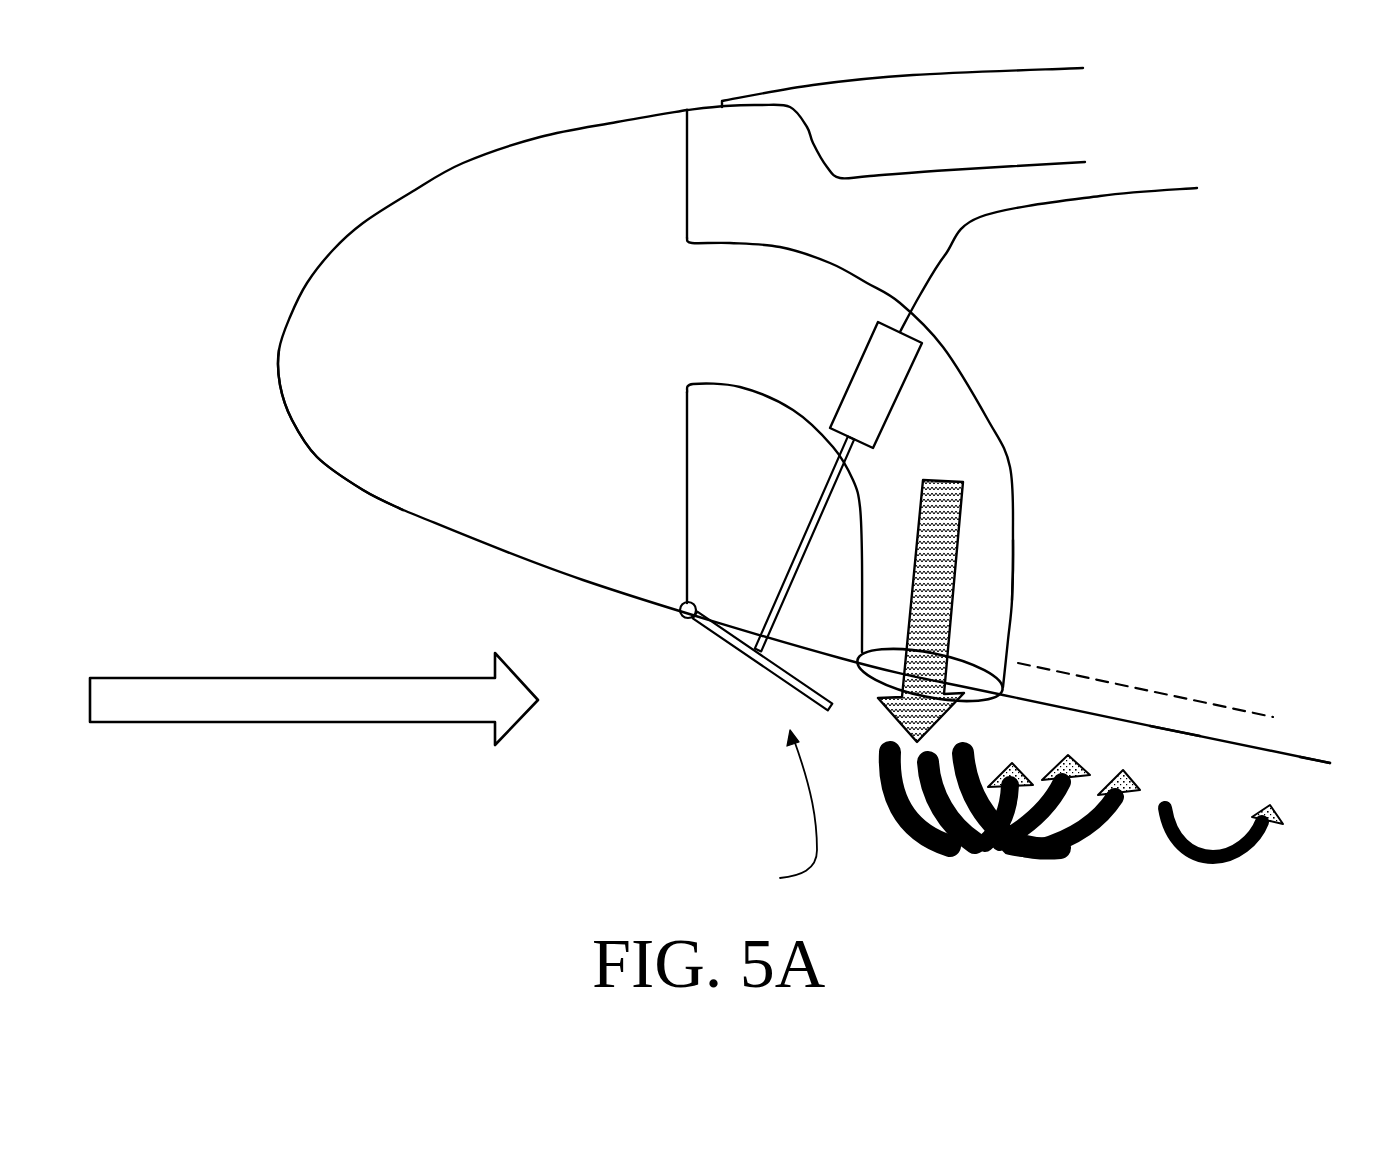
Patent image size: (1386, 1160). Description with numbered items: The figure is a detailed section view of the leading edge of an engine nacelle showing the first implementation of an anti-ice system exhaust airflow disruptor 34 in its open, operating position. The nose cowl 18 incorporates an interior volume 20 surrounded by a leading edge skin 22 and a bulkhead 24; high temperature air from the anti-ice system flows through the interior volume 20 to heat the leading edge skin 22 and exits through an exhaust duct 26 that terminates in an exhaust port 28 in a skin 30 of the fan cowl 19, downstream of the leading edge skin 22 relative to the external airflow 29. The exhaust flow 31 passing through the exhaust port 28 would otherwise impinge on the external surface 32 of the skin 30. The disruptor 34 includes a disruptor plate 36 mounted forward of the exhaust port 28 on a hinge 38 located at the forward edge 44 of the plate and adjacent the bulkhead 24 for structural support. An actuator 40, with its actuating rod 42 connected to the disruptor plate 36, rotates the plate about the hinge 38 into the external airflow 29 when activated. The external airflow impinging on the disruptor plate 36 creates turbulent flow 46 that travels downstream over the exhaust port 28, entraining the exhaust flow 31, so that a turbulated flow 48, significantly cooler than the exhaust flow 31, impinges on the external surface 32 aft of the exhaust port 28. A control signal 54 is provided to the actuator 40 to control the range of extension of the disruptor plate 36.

The nose cowl 18 is at (518, 562).
The fan cowl 19 is at (1325, 766).
The interior volume 20 is at (387, 392).
The leading edge skin 22 is at (400, 512).
The bulkhead 24 is at (687, 516).
The exhaust duct 26 is at (933, 400).
The exhaust port 28 is at (967, 687).
The external airflow 29 is at (365, 723).
The skin 30 is at (1102, 700).
The exhaust flow 31 is at (953, 588).
The external surface 32 is at (1172, 735).
The anti-ice system exhaust airflow disruptor 34 is at (780, 878).
The disruptor plate 36 is at (760, 667).
The hinge 38 is at (681, 619).
The actuator 40 is at (890, 377).
The actuating rod 42 is at (915, 518).
The forward edge 44 is at (694, 622).
The turbulent flow 46 is at (1010, 842).
The turbulated flow 48 is at (1253, 847).
The control signal 54 is at (987, 218).